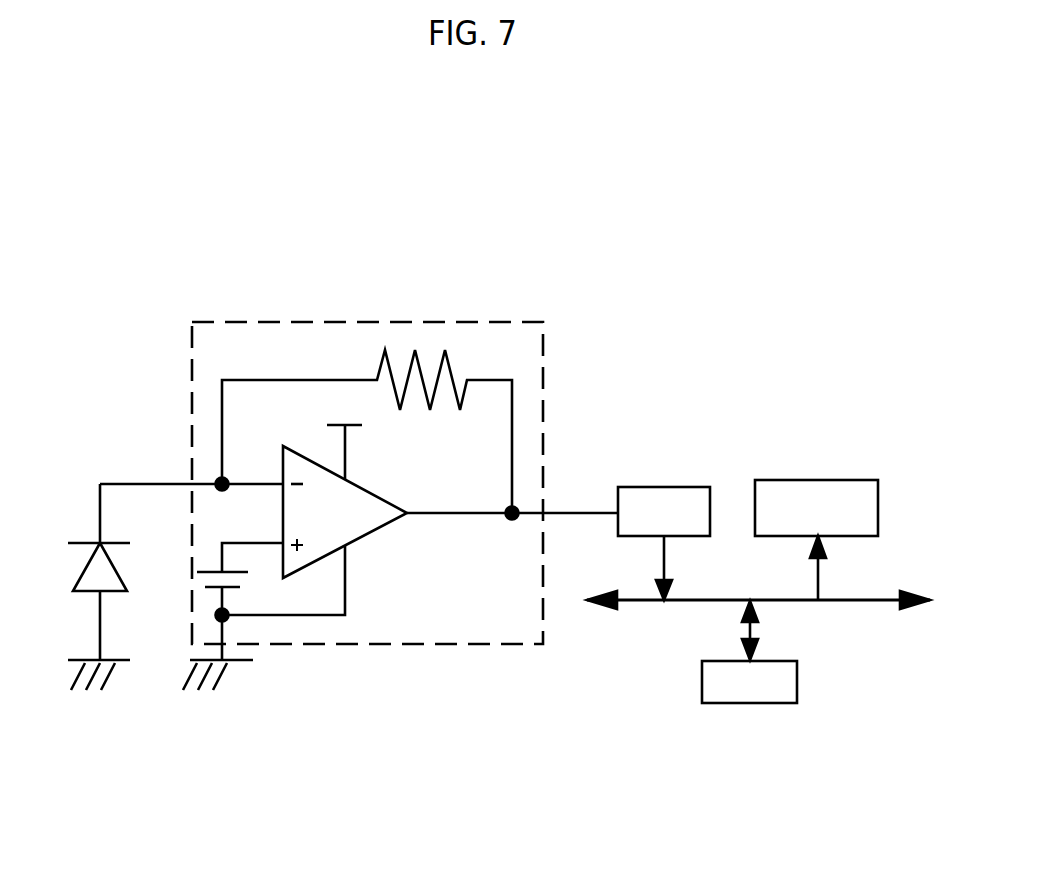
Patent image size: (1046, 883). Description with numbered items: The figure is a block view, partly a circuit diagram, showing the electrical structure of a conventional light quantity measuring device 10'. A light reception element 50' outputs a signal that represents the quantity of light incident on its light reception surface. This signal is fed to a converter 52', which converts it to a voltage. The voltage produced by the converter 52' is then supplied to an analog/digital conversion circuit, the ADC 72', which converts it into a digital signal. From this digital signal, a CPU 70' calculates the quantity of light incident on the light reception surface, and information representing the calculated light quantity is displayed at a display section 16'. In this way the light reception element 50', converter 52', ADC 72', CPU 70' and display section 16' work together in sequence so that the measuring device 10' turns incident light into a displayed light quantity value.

The light quantity measuring device 10' is at (499, 466).
The converter 52' is at (363, 462).
The light reception element 50' is at (145, 587).
The analog/digital conversion circuit (ADC) 72' is at (667, 506).
The display section 16' is at (816, 506).
The CPU 70' is at (749, 692).